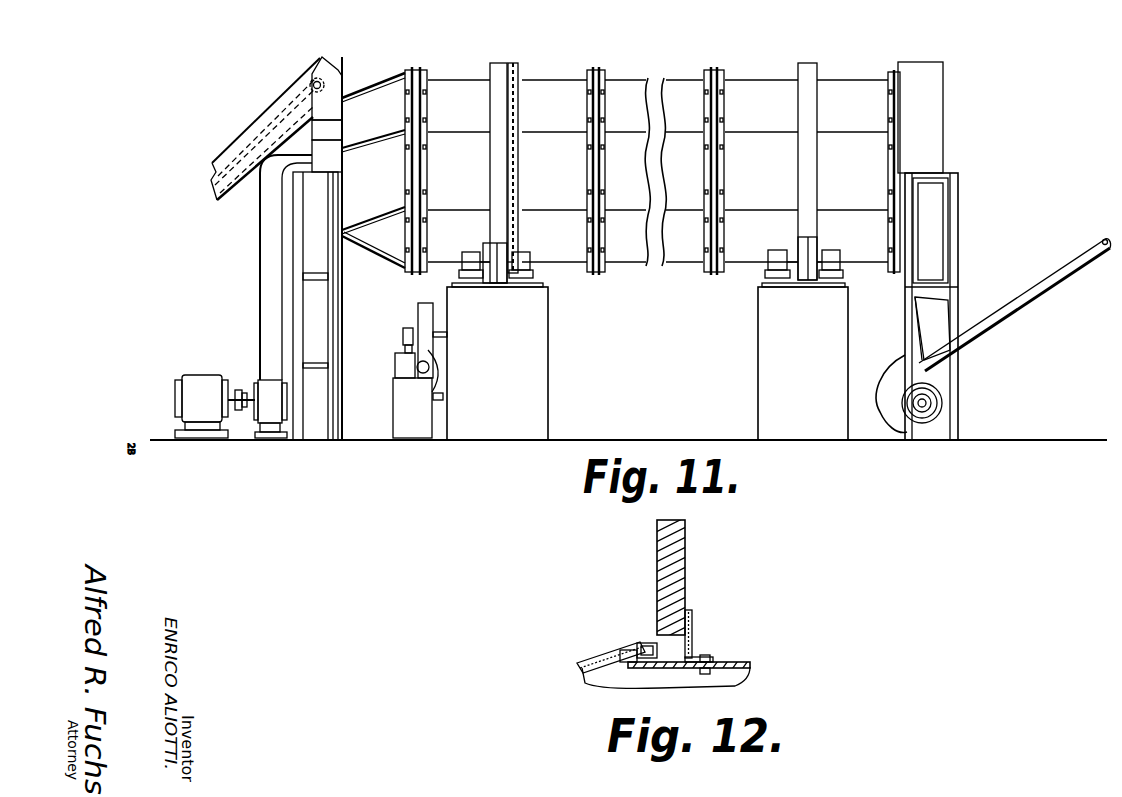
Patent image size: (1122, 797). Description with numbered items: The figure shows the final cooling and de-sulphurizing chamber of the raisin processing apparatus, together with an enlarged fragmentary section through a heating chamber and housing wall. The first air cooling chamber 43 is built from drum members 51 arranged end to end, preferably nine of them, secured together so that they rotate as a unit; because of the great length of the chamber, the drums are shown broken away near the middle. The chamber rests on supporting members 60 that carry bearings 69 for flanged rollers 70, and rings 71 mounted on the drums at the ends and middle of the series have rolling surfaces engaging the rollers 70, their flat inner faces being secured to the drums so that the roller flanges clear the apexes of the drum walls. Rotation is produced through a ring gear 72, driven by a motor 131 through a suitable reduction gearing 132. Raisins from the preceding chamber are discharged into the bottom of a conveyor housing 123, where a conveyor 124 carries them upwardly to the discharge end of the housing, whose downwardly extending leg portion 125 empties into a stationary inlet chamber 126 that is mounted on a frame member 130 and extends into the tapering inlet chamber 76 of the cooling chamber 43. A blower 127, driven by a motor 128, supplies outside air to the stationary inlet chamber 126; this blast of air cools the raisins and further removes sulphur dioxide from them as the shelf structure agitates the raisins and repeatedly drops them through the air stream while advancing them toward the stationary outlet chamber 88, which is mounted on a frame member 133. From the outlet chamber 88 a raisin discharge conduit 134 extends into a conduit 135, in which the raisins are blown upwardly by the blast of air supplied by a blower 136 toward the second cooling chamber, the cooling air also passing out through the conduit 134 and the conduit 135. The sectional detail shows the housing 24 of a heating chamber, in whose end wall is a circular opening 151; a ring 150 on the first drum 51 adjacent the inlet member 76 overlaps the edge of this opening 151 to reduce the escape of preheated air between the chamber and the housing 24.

In FIG. 11, the first air cooling chamber 43 is at (553, 77).
In FIG. 11, the drum member 51 is at (447, 90).
In FIG. 12, the drum member 51 is at (737, 662).
In FIG. 11, the supporting member 60 is at (533, 350).
In FIG. 11, the bearing 69 is at (462, 260).
In FIG. 11, the flanged roller 70 is at (493, 252).
In FIG. 11, the ring 71 is at (500, 73).
In FIG. 11, the ring gear 72 is at (517, 67).
In FIG. 11, the tapering inlet chamber 76 is at (383, 80).
In FIG. 12, the tapering inlet chamber 76 is at (618, 645).
In FIG. 11, the stationary outlet chamber 88 is at (930, 95).
In FIG. 11, the conveyor housing 123 is at (302, 97).
In FIG. 11, the conveyor 124 is at (283, 92).
In FIG. 11, the leg portion 125 is at (330, 113).
In FIG. 11, the stationary inlet chamber 126 is at (317, 153).
In FIG. 11, the blower 127 is at (270, 393).
In FIG. 11, the motor 128 is at (197, 385).
In FIG. 11, the frame member 130 is at (335, 282).
In FIG. 11, the motor 131 is at (420, 373).
In FIG. 11, the reduction gearing 132 is at (425, 318).
In FIG. 11, the frame member 133 is at (953, 268).
In FIG. 11, the raisin discharge conduit 134 is at (933, 305).
In FIG. 11, the conduit 135 is at (962, 345).
In FIG. 11, the blower 136 is at (937, 402).
In FIG. 12, the housing 24 is at (677, 582).
In FIG. 12, the ring 150 is at (688, 637).
In FIG. 12, the circular opening 151 is at (658, 636).